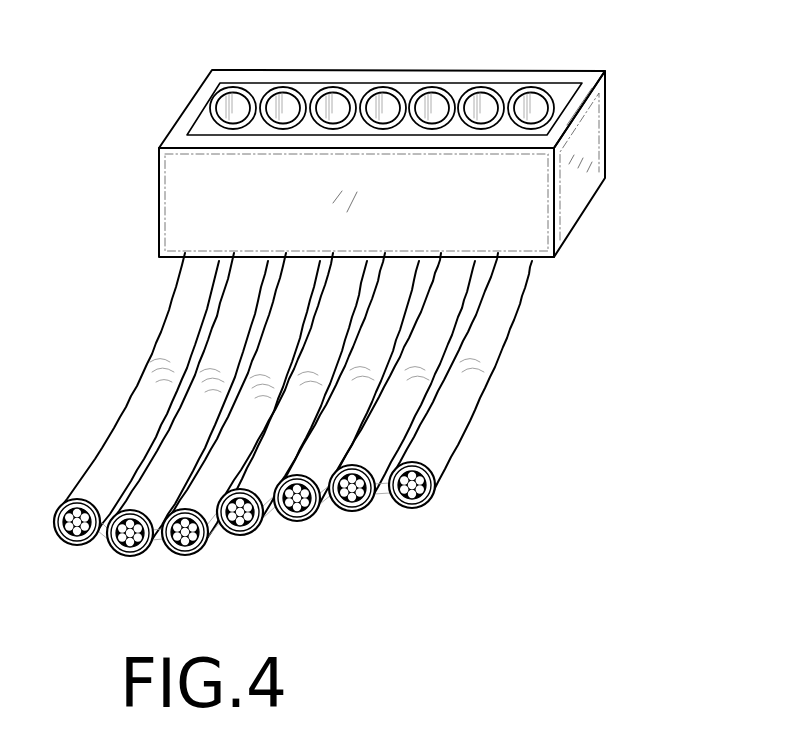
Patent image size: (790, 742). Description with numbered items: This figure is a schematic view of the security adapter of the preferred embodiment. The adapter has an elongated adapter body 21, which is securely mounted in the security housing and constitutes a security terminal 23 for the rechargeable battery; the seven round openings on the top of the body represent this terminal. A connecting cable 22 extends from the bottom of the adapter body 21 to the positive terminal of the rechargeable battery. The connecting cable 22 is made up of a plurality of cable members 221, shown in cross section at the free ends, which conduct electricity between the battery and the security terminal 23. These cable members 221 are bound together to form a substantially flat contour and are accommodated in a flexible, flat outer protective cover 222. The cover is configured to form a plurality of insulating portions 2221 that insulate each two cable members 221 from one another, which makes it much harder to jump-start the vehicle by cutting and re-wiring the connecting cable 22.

The adapter body 21 is at (578, 182).
The connecting cable 22 is at (348, 442).
The security terminal 23 is at (432, 112).
The cable members 221 is at (415, 495).
The outer protective cover 222 is at (448, 427).
The insulating portions 2221 is at (192, 362).